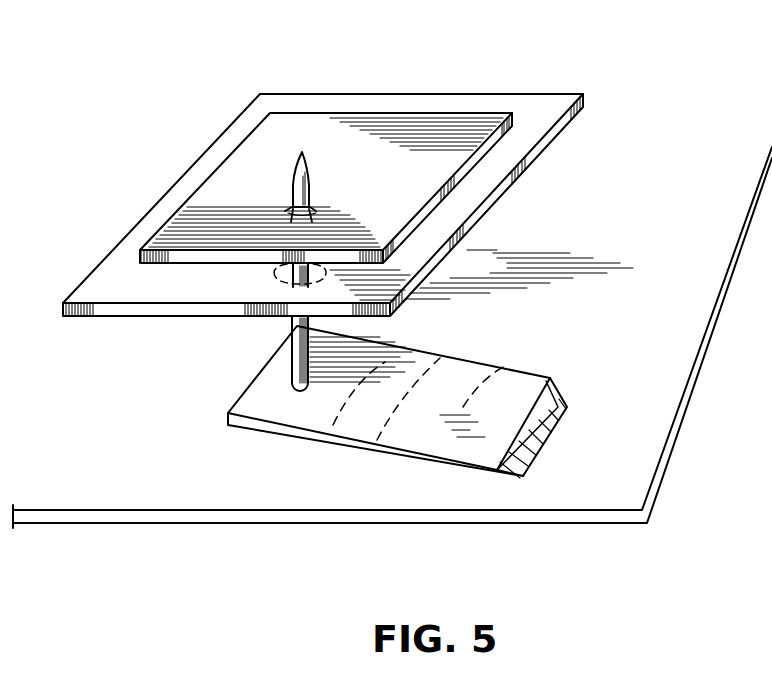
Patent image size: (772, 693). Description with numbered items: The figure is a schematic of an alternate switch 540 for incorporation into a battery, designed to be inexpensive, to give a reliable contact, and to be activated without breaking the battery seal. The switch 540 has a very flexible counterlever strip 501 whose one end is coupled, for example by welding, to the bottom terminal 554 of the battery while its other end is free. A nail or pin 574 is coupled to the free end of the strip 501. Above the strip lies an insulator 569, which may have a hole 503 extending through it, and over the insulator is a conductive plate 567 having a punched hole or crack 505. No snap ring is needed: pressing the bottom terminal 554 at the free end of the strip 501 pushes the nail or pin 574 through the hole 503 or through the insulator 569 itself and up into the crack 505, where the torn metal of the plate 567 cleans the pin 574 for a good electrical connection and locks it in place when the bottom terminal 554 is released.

The flexible counterlever strip 501 is at (525, 378).
The hole 503 is at (272, 272).
The punched hole or crack 505 is at (315, 208).
The alternate switch 540 is at (318, 453).
The bottom terminal 554 is at (610, 498).
The conductive plate 567 is at (450, 112).
The insulator 569 is at (550, 105).
The nail or pin 574 is at (295, 172).